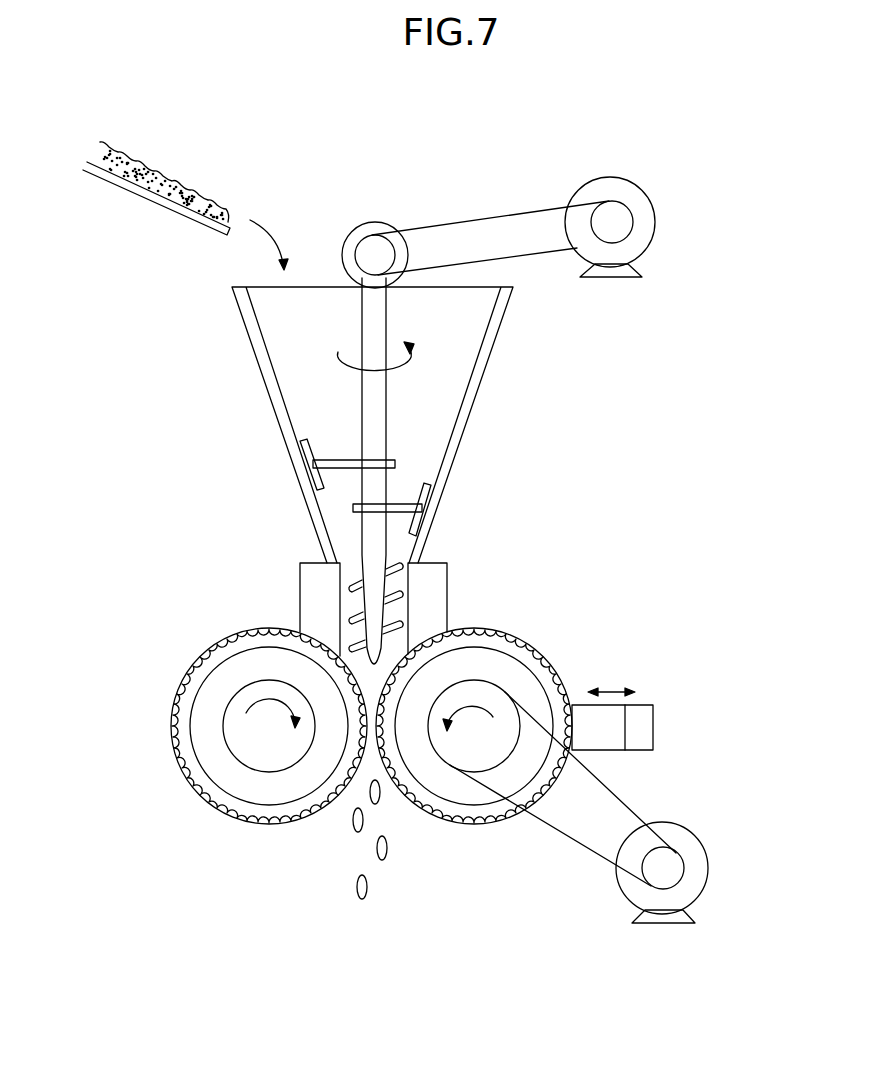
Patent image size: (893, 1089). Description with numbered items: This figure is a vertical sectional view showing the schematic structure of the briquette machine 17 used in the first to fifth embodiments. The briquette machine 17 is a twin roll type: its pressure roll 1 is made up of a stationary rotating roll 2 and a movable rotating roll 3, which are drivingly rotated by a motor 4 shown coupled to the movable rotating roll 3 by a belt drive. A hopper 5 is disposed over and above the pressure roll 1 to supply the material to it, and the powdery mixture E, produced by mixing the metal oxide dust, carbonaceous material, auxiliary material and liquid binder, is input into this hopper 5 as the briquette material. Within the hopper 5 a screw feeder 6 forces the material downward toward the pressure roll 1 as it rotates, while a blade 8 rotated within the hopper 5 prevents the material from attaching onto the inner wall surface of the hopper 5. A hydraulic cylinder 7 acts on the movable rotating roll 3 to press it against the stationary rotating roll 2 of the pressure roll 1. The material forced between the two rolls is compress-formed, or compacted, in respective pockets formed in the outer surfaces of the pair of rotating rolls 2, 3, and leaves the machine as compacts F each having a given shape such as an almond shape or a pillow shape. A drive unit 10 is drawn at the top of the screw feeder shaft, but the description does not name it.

The pressure roll 1 is at (326, 708).
The stationary rotating roll 2 is at (200, 648).
The movable rotating roll 3 is at (518, 642).
The motor 4 is at (707, 890).
The hopper 5 is at (473, 412).
The screw feeder 6 is at (298, 579).
The hydraulic cylinder 7 is at (638, 752).
The blade 8 is at (312, 447).
The screw drive motor 10 is at (619, 177).
The briquette machine 17 is at (652, 432).
The powdery mixture E is at (145, 162).
The compacts F is at (367, 887).